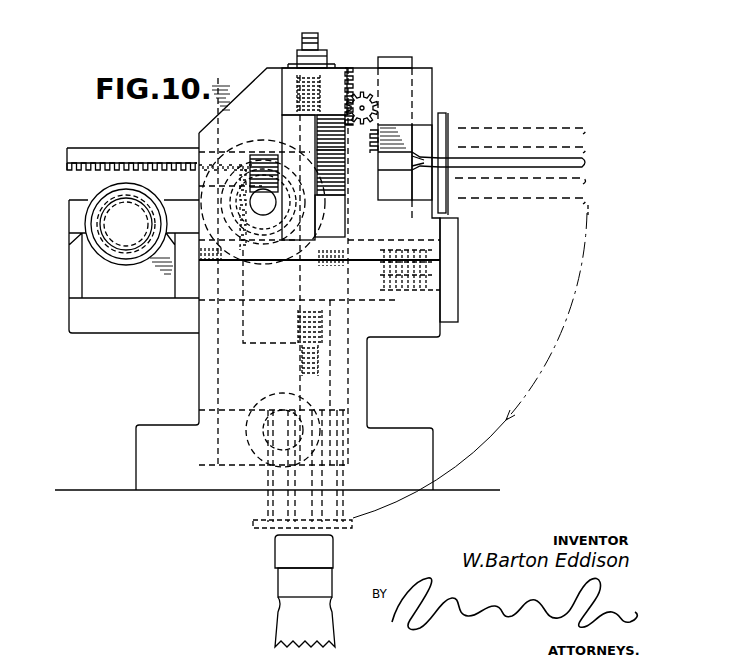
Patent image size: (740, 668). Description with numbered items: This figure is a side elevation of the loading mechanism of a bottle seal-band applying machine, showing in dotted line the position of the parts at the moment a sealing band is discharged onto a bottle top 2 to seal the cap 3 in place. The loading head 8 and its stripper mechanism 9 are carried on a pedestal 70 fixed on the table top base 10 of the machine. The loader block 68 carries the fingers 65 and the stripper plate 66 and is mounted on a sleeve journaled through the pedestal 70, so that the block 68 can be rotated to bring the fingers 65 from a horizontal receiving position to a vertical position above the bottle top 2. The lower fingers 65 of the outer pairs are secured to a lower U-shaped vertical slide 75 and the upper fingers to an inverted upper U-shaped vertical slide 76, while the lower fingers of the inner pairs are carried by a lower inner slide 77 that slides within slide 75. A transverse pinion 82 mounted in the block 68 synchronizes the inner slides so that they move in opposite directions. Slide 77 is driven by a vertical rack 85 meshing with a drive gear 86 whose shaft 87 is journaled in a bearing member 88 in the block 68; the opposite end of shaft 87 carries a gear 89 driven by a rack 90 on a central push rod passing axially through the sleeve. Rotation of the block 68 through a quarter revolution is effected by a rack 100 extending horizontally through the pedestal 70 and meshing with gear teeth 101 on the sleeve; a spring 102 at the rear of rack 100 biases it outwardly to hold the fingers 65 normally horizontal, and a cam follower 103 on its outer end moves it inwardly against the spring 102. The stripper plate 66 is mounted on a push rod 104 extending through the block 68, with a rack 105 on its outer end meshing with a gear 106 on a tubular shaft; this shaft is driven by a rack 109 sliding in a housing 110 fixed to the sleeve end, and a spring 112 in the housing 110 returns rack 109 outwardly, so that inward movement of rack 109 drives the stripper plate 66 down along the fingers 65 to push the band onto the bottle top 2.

The bottle top 2 is at (269, 610).
The cap 3 is at (267, 560).
The loading head 8 is at (444, 77).
The stripper mechanism 9 is at (459, 124).
The table top base 10 is at (104, 477).
The fingers 65 is at (590, 164).
The stripper plate 66 is at (453, 116).
The loader block 68 is at (259, 82).
The pedestal 70 is at (264, 123).
The lower U-shaped vertical slide 75 is at (397, 192).
The upper U-shaped vertical slide 76 is at (400, 57).
The lower inner slide 77 is at (324, 64).
The transverse pinion 82 is at (364, 94).
The vertical rack 85 is at (327, 128).
The drive gear 86 is at (321, 188).
The shaft 87 is at (314, 25).
The bearing member 88 is at (278, 120).
The gear 89 is at (263, 150).
The rack 90 is at (256, 13).
The rack 100 is at (258, 258).
The gear teeth 101 is at (216, 208).
The spring 102 is at (446, 274).
The cam follower 103 is at (84, 212).
The push rod 104 is at (105, 141).
The rack 105 is at (88, 167).
The gear 106 is at (199, 186).
The rack 109 is at (265, 306).
The housing 110 is at (194, 115).
The spring 112 is at (298, 86).